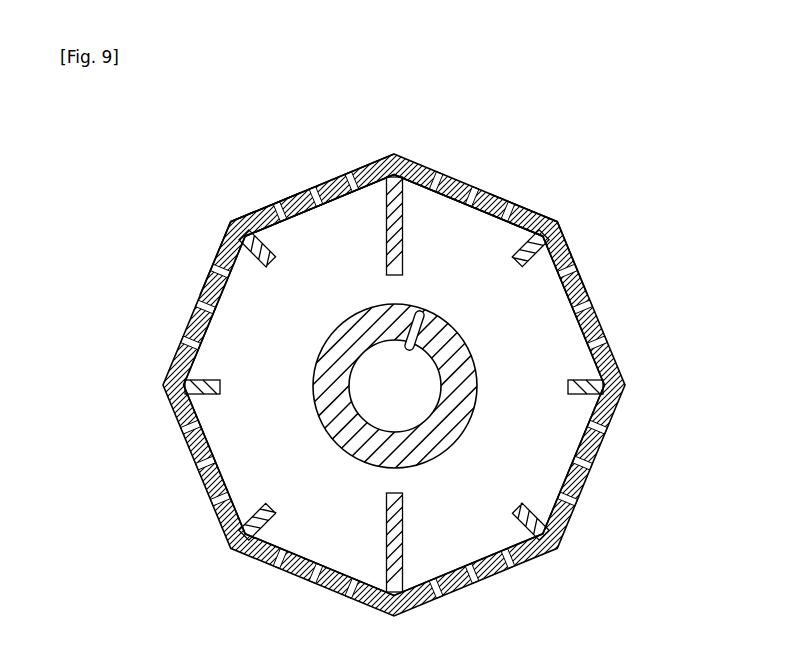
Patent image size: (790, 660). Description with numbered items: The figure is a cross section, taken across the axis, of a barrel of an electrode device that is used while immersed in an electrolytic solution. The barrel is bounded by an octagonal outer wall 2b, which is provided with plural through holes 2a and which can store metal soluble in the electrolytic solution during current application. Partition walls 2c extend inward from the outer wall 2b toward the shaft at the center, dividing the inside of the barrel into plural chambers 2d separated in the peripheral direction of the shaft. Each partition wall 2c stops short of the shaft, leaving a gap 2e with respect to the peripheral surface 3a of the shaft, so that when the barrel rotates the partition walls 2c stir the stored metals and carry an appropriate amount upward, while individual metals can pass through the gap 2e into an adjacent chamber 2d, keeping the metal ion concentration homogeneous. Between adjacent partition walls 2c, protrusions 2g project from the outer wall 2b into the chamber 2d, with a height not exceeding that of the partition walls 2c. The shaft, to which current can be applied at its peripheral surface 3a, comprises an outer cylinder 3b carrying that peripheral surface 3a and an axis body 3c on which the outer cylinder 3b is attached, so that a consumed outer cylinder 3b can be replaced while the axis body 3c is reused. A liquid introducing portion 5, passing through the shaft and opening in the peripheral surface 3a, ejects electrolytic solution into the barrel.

The through holes 2a is at (437, 171).
The outer wall 2b is at (527, 212).
The partition walls 2c is at (365, 168).
The chambers 2d is at (463, 218).
The gap 2e is at (400, 285).
The protrusions 2g is at (240, 219).
The peripheral surface 3a is at (315, 373).
The outer cylinder 3b is at (363, 402).
The axis body 3c is at (330, 420).
The liquid introducing portion 5 is at (418, 311).